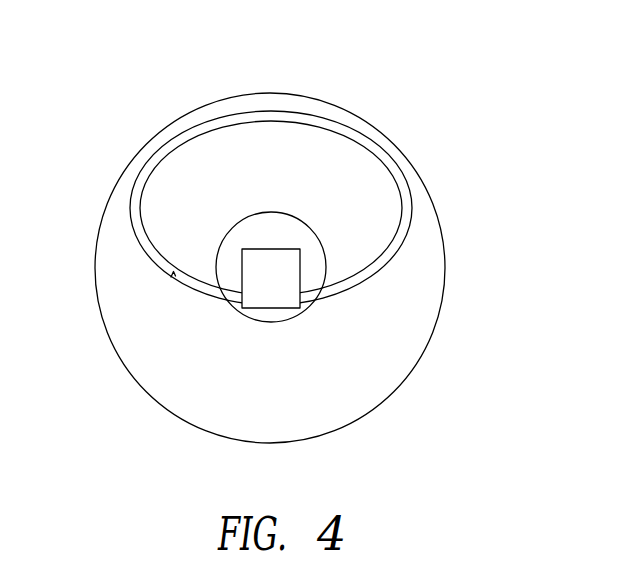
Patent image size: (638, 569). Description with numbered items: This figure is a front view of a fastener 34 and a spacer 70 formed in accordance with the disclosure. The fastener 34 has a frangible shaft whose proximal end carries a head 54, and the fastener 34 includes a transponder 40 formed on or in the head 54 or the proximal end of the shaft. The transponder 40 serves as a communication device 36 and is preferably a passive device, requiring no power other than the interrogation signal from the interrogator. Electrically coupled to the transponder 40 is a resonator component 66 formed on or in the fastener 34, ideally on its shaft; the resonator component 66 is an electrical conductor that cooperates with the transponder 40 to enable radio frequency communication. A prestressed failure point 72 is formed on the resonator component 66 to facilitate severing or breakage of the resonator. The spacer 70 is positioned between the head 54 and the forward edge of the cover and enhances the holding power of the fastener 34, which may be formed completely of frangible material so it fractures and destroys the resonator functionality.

The fastener 34 is at (286, 229).
The communication device 36 is at (252, 323).
The transponder 40 is at (270, 310).
The head 54 is at (252, 312).
The resonator component 66 is at (316, 232).
The spacer 70 is at (436, 197).
The prestressed failure point 72 is at (370, 276).